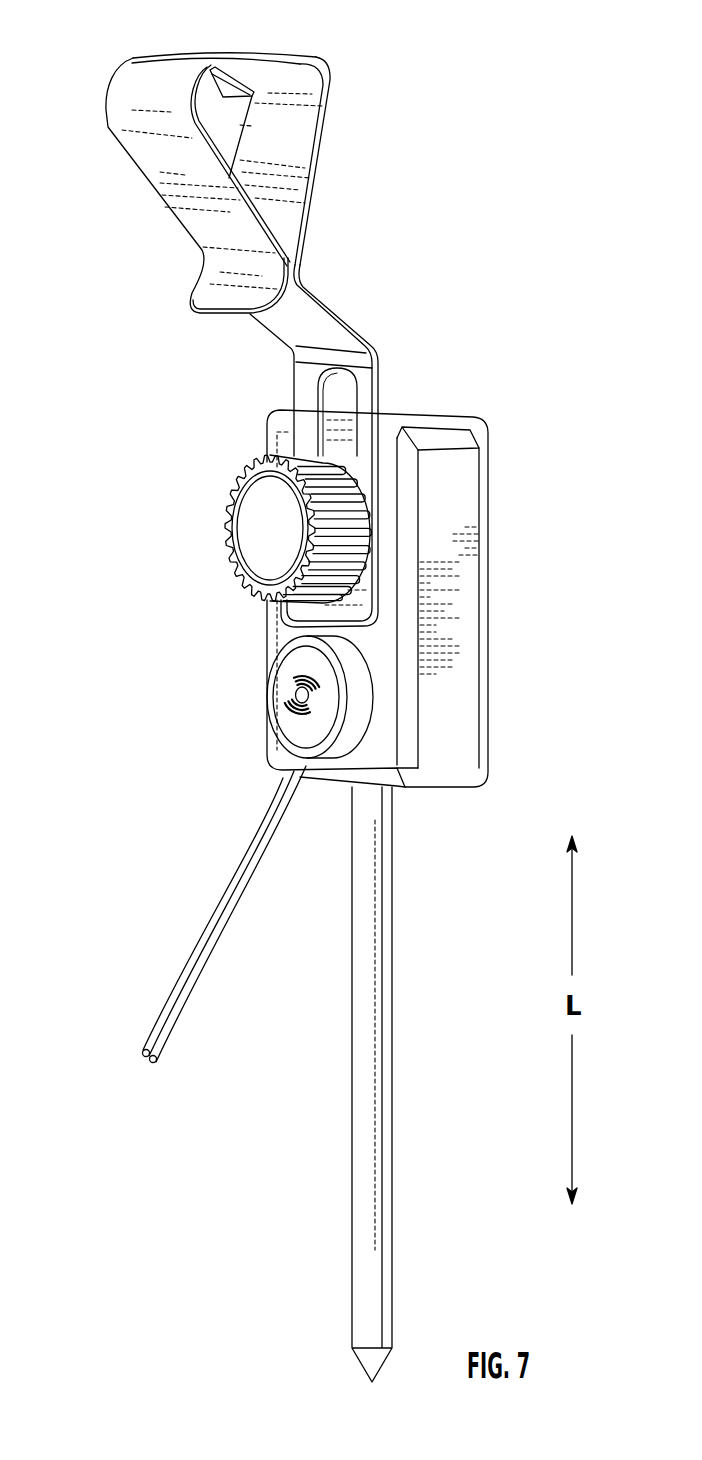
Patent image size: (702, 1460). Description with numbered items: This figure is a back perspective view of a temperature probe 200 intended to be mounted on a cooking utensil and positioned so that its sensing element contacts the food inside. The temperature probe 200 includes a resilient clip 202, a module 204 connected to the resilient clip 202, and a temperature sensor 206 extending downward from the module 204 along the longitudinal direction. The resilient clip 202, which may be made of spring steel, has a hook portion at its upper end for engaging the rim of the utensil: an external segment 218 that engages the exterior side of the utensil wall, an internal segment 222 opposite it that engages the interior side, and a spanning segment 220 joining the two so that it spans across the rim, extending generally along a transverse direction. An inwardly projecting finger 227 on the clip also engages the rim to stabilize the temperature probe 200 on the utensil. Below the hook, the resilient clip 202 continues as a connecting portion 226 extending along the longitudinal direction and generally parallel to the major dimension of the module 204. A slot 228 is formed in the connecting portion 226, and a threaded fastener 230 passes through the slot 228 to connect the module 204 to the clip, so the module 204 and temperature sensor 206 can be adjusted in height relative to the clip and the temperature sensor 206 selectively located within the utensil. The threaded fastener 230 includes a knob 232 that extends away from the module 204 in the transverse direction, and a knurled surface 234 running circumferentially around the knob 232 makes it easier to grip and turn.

The temperature probe 200 is at (110, 712).
The resilient clip 202 is at (378, 210).
The module 204 is at (470, 493).
The temperature sensor 206 is at (386, 1072).
The external segment 218 is at (207, 228).
The spanning segment 220 is at (158, 56).
The internal segment 222 is at (308, 134).
The connecting portion 226 is at (373, 393).
The inwardly projecting finger 227 is at (240, 81).
The slot 228 is at (328, 390).
The threaded fastener 230 is at (368, 540).
The knob 232 is at (252, 518).
The knurled surface 234 is at (236, 591).